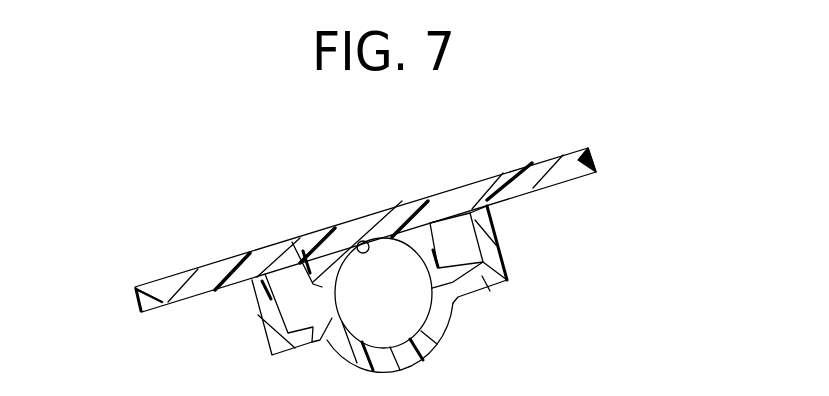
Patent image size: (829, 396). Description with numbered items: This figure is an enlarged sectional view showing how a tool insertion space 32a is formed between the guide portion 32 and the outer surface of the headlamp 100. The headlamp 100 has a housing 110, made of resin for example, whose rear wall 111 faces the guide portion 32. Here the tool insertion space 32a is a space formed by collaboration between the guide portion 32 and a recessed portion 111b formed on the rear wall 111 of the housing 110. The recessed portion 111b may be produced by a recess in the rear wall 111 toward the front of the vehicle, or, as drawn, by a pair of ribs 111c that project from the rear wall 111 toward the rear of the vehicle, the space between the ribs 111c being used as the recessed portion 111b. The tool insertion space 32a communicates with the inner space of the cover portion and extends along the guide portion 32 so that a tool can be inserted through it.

The headlamp 100 is at (167, 290).
The housing 110 is at (212, 268).
The rear wall 111 is at (530, 173).
The recessed portion 111b is at (357, 240).
The ribs 111c is at (322, 287).
The guide portion 32 is at (432, 344).
The tool insertion space 32a is at (408, 303).